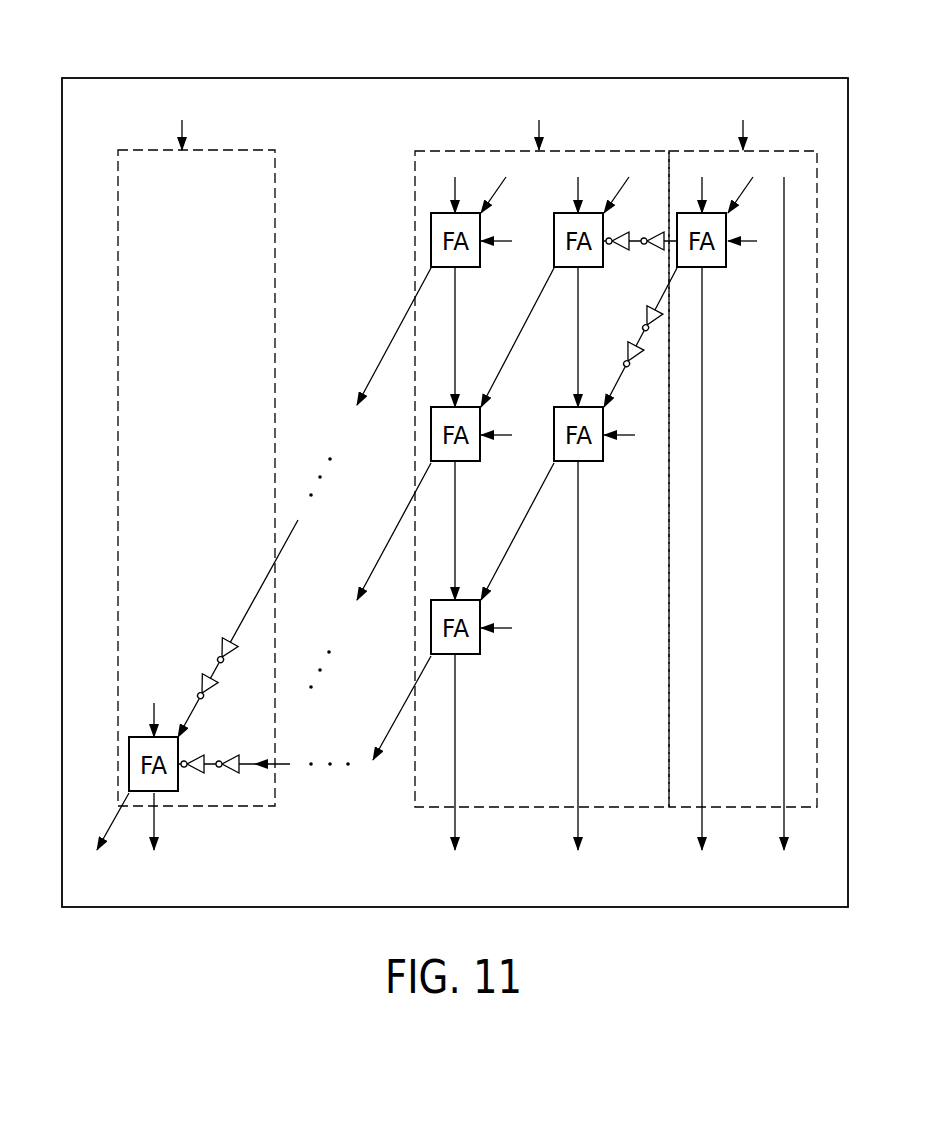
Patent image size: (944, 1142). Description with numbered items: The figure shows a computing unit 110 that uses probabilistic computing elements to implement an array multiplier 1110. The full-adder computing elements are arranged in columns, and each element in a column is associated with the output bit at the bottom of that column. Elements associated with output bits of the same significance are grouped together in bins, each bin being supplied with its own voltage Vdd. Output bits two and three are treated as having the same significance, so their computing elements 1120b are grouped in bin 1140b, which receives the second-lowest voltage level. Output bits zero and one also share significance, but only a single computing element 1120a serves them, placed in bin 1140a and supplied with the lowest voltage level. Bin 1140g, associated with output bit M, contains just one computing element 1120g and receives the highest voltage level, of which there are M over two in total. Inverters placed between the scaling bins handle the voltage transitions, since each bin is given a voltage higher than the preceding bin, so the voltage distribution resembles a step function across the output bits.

The computing unit 110 is at (720, 57).
The array multiplier 1110 is at (370, 180).
The bin 1140g is at (155, 150).
The bin 1140b is at (505, 150).
The bin 1140a is at (711, 150).
The computing elements 1120b is at (554, 254).
The computing element 1120a is at (728, 268).
The computing element 1120g is at (178, 778).